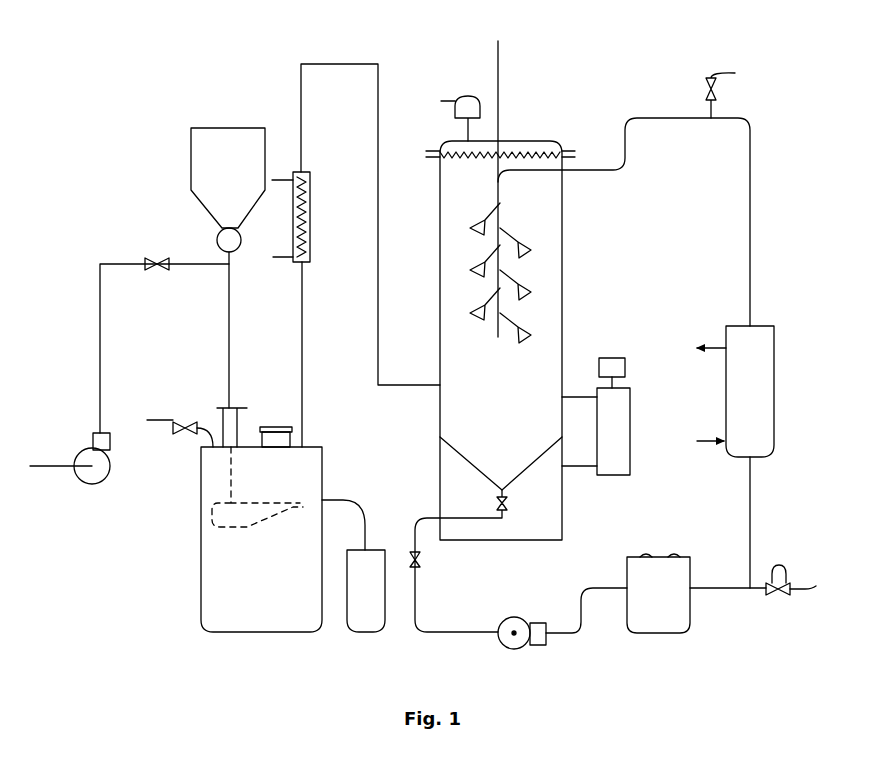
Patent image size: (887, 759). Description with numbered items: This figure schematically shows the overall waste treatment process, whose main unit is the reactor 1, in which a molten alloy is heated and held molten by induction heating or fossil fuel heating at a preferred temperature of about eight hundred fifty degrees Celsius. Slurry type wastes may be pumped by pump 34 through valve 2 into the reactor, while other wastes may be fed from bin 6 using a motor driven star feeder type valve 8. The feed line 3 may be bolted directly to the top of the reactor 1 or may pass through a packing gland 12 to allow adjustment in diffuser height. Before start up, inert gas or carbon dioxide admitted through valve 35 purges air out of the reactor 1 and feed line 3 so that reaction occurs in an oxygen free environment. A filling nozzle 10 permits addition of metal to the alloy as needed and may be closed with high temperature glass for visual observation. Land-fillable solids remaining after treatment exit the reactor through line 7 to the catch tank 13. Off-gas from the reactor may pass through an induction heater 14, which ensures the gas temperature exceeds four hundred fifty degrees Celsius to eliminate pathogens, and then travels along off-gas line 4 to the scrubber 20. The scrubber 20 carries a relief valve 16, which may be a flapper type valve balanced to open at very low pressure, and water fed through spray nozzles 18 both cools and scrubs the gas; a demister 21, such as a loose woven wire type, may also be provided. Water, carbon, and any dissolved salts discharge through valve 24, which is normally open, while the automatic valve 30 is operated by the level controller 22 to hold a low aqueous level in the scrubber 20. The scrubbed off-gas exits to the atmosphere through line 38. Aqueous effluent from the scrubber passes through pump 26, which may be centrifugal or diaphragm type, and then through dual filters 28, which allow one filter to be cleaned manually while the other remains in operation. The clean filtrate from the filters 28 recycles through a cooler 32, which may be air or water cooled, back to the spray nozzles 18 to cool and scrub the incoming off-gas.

The reactor 1 is at (199, 541).
The valve 2 is at (143, 259).
The feed line 3 is at (226, 311).
The off-gas line 4 is at (298, 93).
The bin 6 is at (189, 145).
The line 7 is at (358, 498).
The star feeder type valve 8 is at (217, 235).
The filling nozzle 10 is at (276, 425).
The packing gland 12 is at (220, 406).
The catch tank 13 is at (374, 546).
The induction heater 14 is at (313, 200).
The relief valve 16 is at (461, 89).
The spray nozzles 18 is at (534, 326).
The scrubber 20 is at (567, 238).
The demister 21 is at (526, 154).
The level controller 22 is at (618, 355).
The valve 24 is at (424, 574).
The pump 26 is at (499, 642).
The dual filters 28 is at (694, 618).
The automatic valve 30 is at (791, 559).
The cooler 32 is at (777, 377).
The pump 34 is at (80, 443).
The valve 35 is at (176, 440).
The line 38 is at (502, 64).